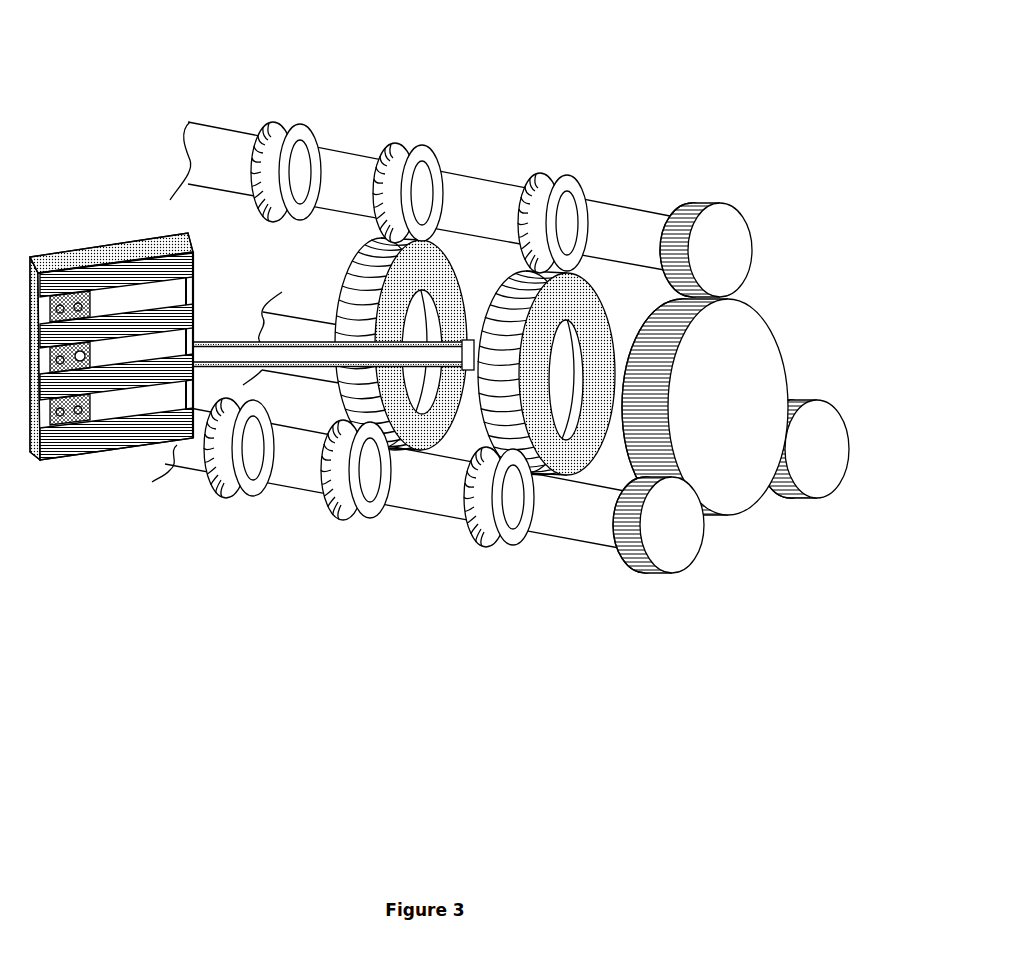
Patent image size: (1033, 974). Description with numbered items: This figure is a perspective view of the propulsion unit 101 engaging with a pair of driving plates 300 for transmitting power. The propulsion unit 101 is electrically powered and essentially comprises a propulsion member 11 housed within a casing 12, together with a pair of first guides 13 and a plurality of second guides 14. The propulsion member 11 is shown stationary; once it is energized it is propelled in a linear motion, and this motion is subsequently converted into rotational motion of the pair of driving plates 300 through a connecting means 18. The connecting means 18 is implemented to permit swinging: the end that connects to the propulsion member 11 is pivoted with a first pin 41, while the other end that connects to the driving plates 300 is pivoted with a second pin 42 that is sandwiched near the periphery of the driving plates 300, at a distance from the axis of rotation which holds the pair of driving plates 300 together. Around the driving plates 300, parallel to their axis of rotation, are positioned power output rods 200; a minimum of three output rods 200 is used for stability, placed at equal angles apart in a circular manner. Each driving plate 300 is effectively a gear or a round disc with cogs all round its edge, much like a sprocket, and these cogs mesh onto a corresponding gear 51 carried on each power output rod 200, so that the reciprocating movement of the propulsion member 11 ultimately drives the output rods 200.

The propulsion member 11 is at (58, 430).
The casing 12 is at (195, 287).
The first guides 13 is at (186, 243).
The second guides 14 is at (143, 430).
The connecting means 18 is at (352, 355).
The first pin 41 is at (80, 351).
The second pin 42 is at (467, 353).
The gear 51 is at (270, 133).
The propulsion unit 101 is at (137, 401).
The power output rod 200 is at (282, 447).
The driving plates 300 is at (420, 447).